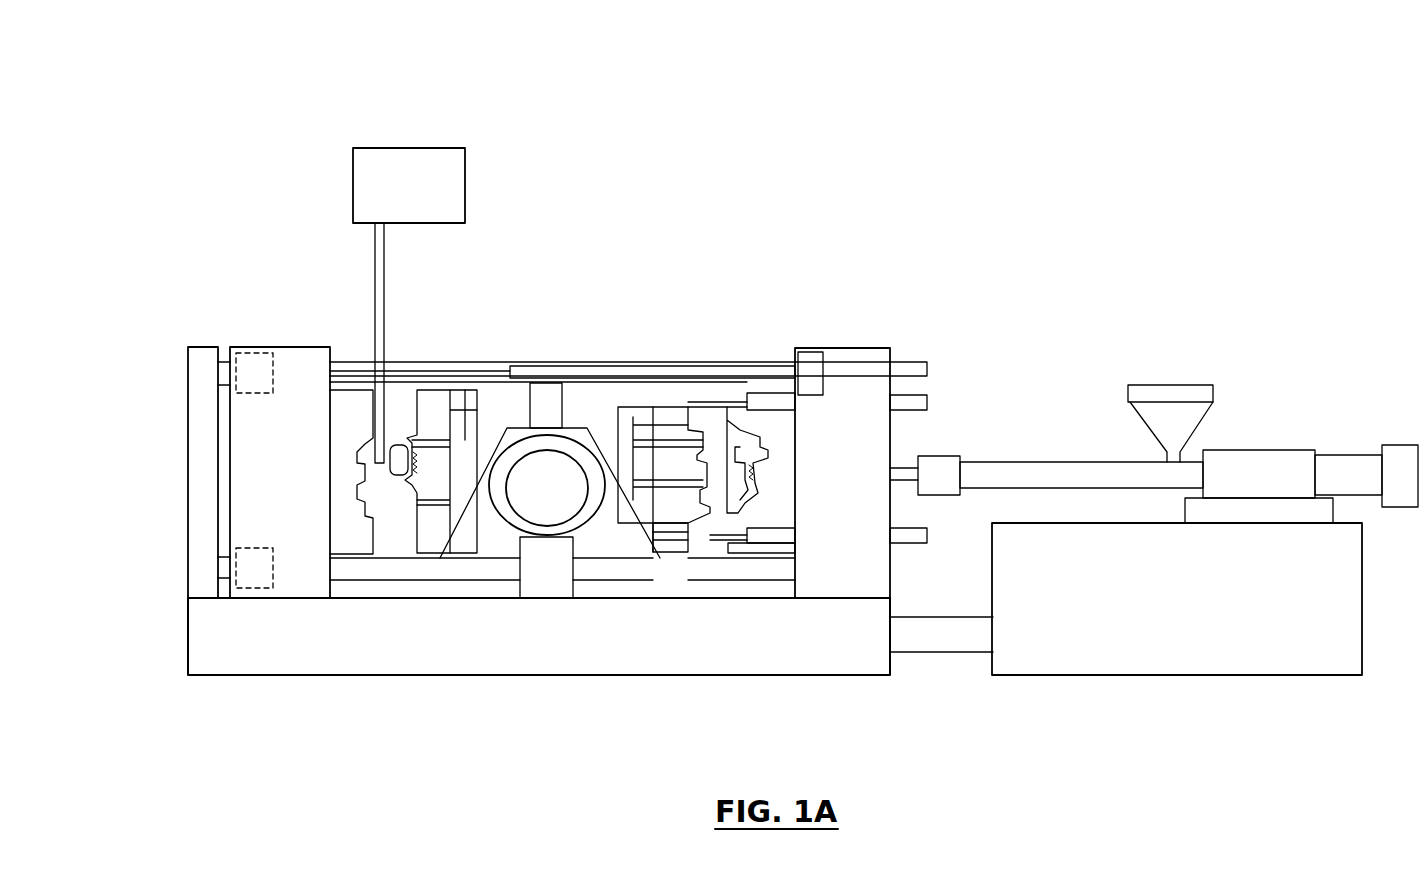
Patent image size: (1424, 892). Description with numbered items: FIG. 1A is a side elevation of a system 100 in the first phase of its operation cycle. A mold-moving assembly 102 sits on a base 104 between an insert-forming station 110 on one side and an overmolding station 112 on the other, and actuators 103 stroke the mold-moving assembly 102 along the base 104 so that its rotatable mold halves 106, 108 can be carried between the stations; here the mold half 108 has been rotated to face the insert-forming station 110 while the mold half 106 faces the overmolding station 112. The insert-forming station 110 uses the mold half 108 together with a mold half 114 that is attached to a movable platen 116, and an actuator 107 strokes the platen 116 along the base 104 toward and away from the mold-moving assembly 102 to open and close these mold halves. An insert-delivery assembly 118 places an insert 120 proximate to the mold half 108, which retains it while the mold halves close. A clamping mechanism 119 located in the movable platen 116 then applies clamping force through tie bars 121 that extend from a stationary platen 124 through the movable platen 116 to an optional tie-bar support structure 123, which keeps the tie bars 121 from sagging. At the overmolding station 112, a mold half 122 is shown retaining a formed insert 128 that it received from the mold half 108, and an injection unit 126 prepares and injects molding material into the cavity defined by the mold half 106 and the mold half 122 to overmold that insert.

The system 100 is at (1177, 317).
The mold-moving assembly 102 is at (557, 465).
The actuators 103 is at (775, 533).
The base 104 is at (280, 653).
The mold half 106 is at (680, 508).
The actuator 107 is at (628, 375).
The mold half 108 is at (432, 535).
The insert-forming station 110 is at (423, 337).
The overmolding station 112 is at (720, 347).
The mold half 114 is at (360, 540).
The movable platen 116 is at (307, 367).
The insert-delivery assembly 118 is at (387, 163).
The clamping mechanism 119 is at (260, 353).
The insert 120 is at (402, 445).
The tie bars 121 is at (227, 365).
The mold half 122 is at (770, 545).
The tie-bar support structure 123 is at (203, 502).
The stationary platen 124 is at (862, 570).
The injection unit 126 is at (1223, 653).
The formed insert 128 is at (738, 540).